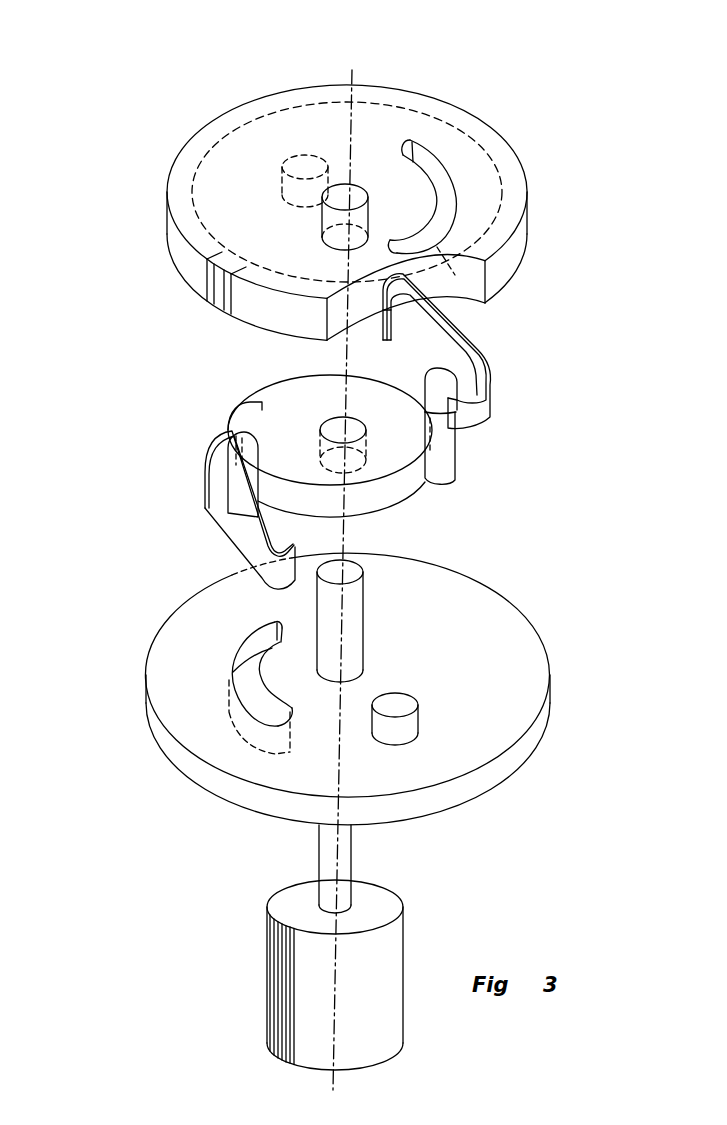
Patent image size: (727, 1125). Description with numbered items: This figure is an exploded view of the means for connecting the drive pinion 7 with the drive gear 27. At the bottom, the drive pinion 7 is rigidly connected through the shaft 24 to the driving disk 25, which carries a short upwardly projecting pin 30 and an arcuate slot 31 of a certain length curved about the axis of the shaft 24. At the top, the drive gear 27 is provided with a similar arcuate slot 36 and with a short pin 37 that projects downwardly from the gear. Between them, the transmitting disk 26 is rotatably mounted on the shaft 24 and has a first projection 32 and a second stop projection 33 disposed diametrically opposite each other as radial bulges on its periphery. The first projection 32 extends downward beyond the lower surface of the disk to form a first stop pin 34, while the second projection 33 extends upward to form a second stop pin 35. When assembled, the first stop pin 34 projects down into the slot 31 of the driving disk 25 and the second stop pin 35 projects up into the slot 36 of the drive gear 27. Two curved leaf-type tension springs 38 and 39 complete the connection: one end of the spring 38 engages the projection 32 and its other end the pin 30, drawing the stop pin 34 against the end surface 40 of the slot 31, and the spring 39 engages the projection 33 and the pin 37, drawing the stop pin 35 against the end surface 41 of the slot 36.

The drive pinion 7 is at (363, 1040).
The shaft 24 is at (350, 638).
The driving disk 25 is at (508, 762).
The transmitting disk 26 is at (403, 487).
The drive gear 27 is at (500, 272).
The pin 30 is at (397, 730).
The arcuate slot 31 is at (262, 703).
The first projection 32 is at (248, 418).
The second stop projection 33 is at (440, 453).
The first stop pin 34 is at (248, 482).
The second stop pin 35 is at (440, 385).
The arcuate slot 36 is at (427, 210).
The pin 37 is at (307, 163).
The tension spring 38 is at (248, 538).
The tension spring 39 is at (457, 325).
The end surface 40 is at (287, 740).
The end surface 41 is at (407, 150).